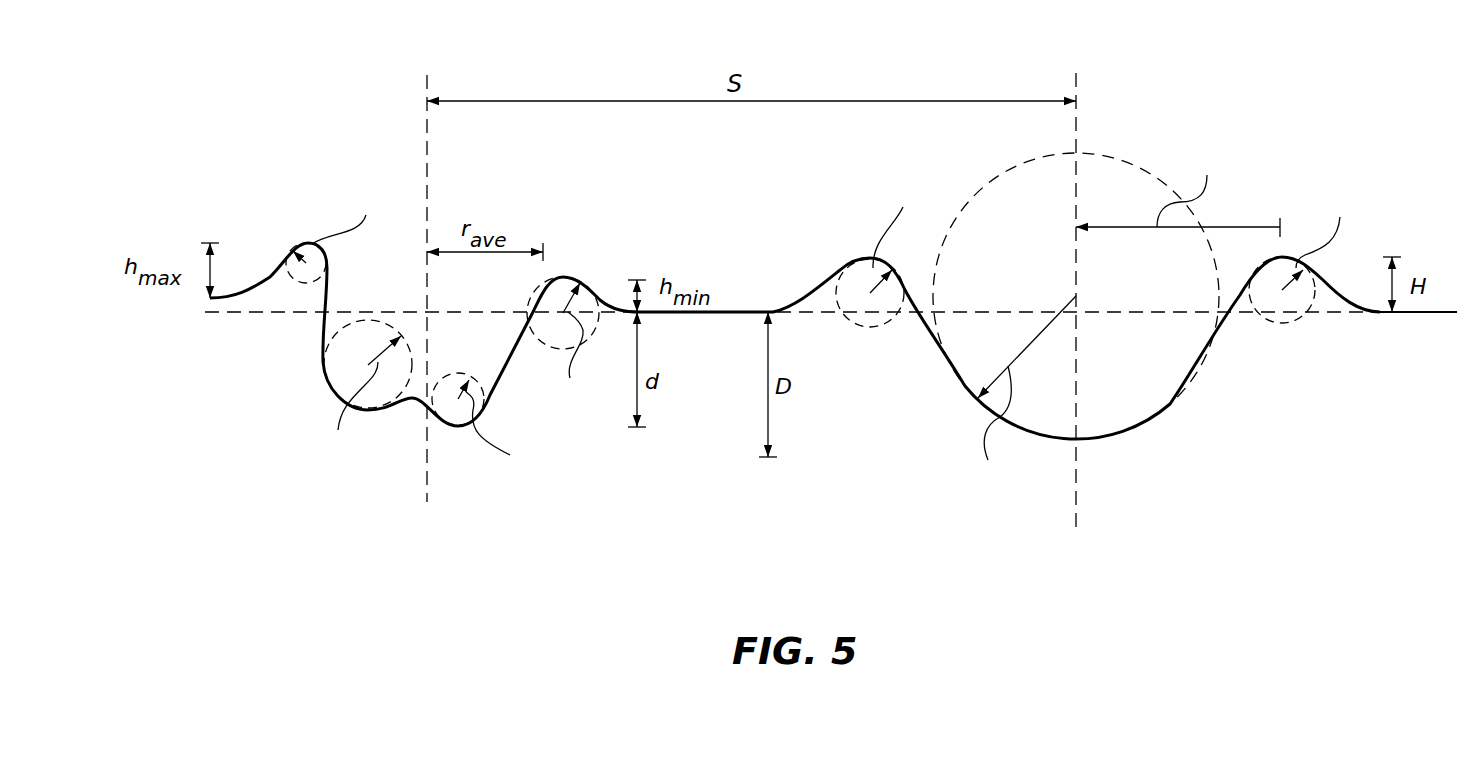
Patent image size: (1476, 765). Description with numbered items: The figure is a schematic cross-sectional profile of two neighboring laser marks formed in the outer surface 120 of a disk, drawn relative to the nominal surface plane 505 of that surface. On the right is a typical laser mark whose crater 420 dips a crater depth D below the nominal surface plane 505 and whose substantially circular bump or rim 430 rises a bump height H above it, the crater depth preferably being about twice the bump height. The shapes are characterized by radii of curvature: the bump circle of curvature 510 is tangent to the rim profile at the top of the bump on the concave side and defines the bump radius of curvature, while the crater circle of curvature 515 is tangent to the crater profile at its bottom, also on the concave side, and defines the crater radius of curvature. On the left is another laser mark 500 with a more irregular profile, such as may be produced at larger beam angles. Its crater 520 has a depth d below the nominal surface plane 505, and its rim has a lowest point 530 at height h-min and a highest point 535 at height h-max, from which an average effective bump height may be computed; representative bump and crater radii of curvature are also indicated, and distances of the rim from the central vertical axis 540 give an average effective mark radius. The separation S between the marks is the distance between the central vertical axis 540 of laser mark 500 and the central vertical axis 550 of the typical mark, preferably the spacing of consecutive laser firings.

The outer surface 120 is at (1418, 313).
The laser mark 500 is at (1283, 132).
The highest point 535 is at (306, 243).
The crater 520 is at (323, 307).
The central vertical axis 540 is at (427, 483).
The lowest point 530 is at (562, 278).
The bump or rim 430 is at (868, 258).
The crater circle of curvature 515 is at (864, 328).
The bump circle of curvature 510 is at (1098, 152).
The central vertical axis 550 is at (1076, 498).
The nominal surface plane 505 is at (1098, 313).
The crater 420 is at (1222, 343).